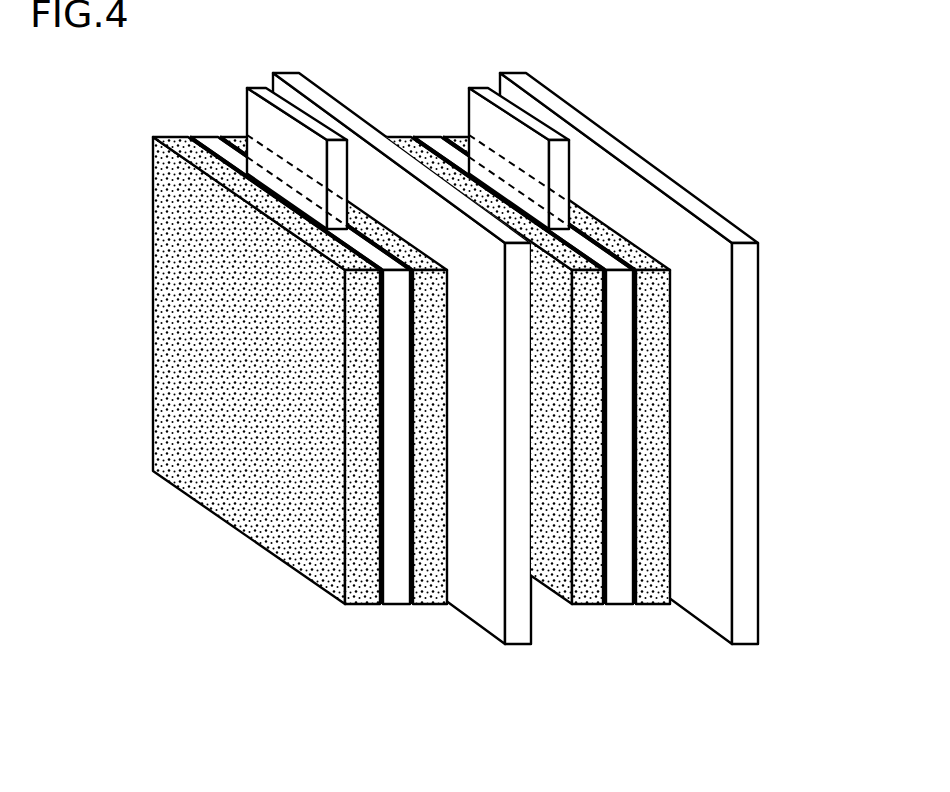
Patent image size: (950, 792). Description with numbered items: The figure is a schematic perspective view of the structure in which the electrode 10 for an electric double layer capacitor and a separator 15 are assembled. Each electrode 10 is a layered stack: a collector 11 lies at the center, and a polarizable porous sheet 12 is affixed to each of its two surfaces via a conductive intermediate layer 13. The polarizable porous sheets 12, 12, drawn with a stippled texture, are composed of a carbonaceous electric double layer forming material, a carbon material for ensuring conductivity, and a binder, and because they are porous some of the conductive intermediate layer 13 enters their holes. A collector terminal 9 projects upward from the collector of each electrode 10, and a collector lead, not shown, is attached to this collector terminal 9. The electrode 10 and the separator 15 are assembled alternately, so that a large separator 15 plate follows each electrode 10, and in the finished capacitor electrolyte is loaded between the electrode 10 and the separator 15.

The collector terminal 9 is at (257, 113).
The electrode 10 is at (491, 464).
The collector 11 is at (396, 604).
The polarizable porous sheet 12 is at (362, 604).
The conductive intermediate layer 13 is at (383, 604).
The separator 15 is at (496, 622).